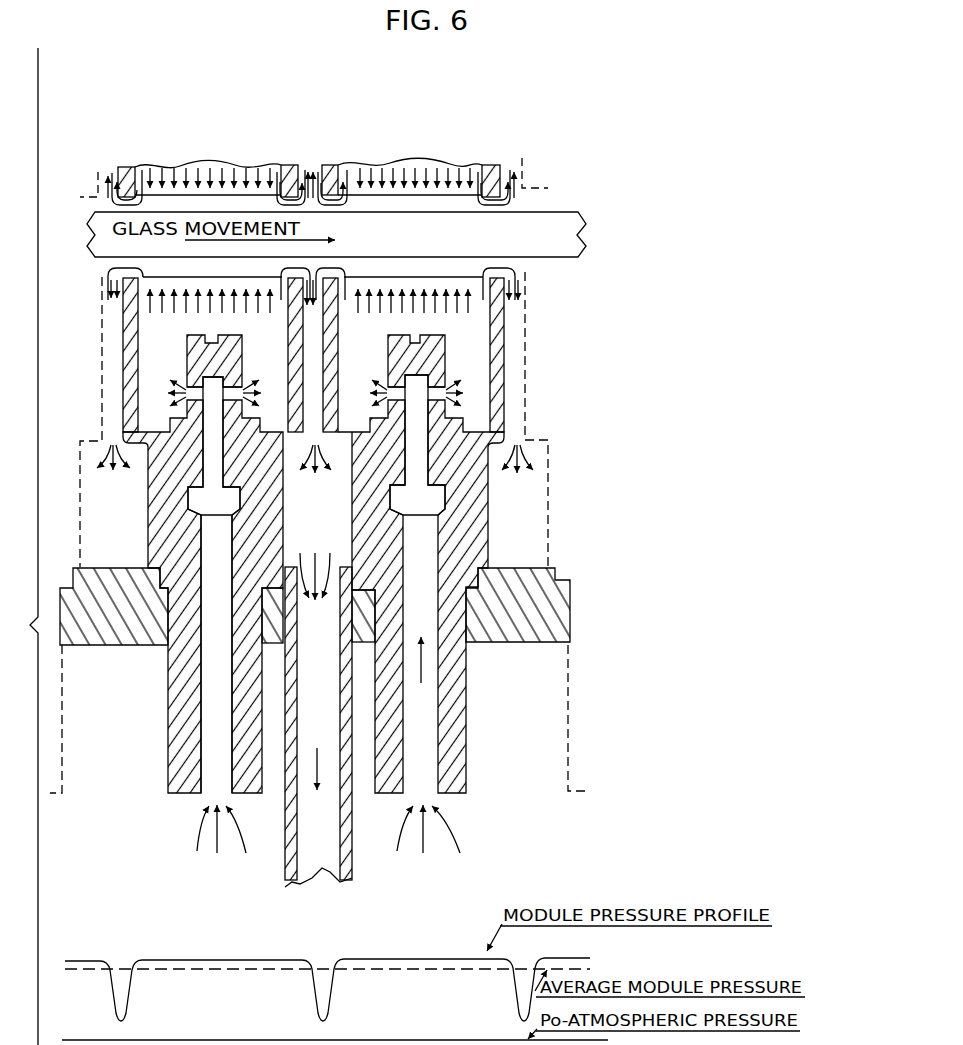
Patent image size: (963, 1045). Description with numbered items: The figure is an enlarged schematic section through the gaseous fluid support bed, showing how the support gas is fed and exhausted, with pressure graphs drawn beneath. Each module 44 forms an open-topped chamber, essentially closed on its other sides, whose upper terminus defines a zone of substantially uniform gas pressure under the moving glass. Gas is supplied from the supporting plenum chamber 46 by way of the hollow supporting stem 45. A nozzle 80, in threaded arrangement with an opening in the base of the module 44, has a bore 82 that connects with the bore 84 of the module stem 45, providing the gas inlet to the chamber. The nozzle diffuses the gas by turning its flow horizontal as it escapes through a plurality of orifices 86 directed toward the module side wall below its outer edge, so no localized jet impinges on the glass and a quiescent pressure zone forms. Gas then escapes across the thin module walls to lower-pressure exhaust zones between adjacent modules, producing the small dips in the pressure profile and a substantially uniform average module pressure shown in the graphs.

The module 44 is at (122, 358).
The hollow supporting stem 45 is at (168, 688).
The supporting plenum chamber 46 is at (501, 866).
The nozzle 80 is at (192, 338).
The bore 82 is at (216, 516).
The bore 84 is at (206, 714).
The orifices 86 is at (192, 384).